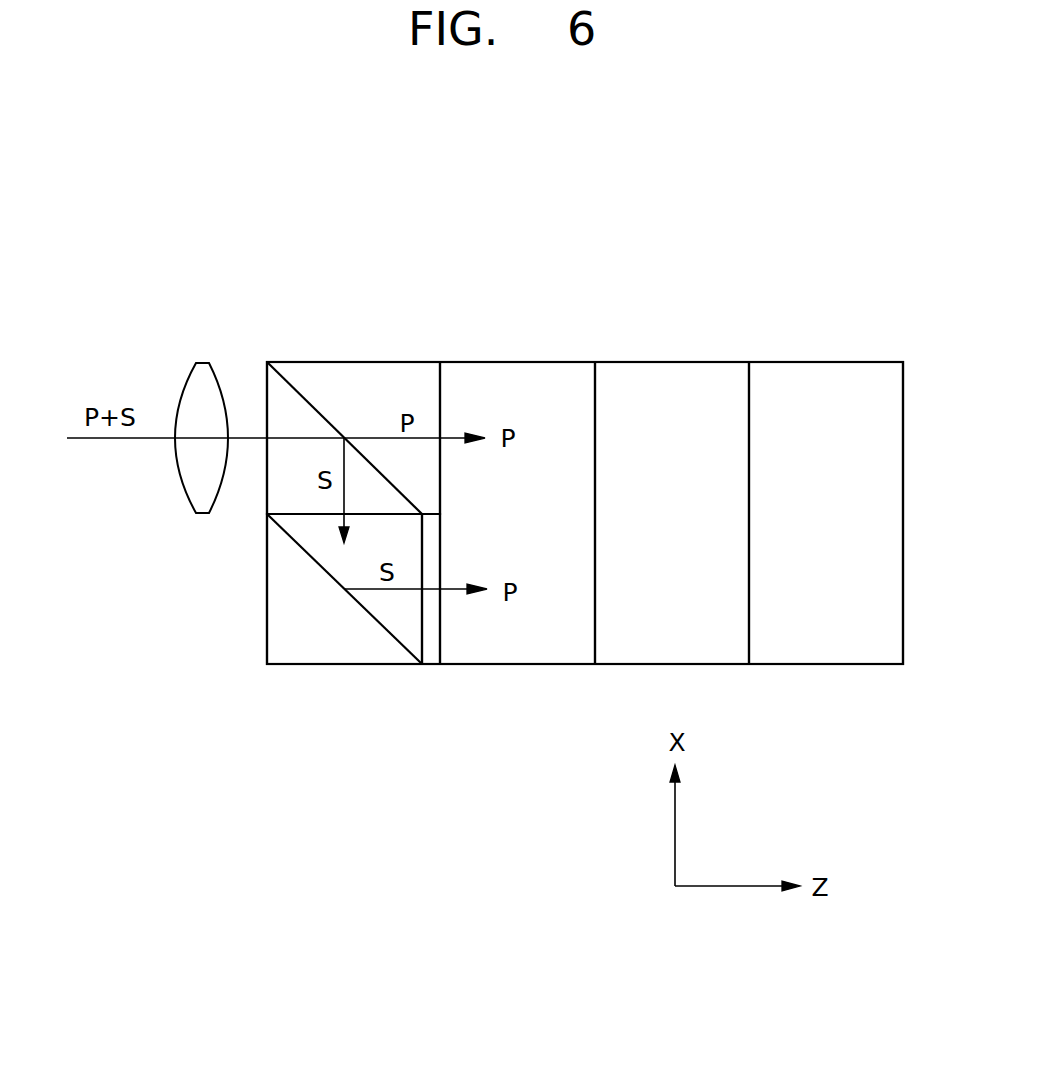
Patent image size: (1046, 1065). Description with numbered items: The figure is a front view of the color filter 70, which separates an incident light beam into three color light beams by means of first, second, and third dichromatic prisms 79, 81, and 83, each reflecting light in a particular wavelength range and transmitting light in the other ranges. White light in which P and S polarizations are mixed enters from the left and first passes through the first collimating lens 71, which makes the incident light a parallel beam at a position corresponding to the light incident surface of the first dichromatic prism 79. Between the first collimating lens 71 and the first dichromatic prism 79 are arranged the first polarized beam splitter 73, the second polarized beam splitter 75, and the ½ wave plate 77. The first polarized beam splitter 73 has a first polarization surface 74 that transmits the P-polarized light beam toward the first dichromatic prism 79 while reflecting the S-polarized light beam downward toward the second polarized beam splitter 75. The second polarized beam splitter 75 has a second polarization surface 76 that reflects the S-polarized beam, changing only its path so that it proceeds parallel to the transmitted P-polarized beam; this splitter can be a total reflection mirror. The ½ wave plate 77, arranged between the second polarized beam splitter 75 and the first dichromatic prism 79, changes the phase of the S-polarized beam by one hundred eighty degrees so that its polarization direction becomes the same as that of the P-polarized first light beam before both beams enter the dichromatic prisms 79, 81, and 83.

The color filter 70 is at (817, 260).
The first collimating lens 71 is at (202, 362).
The first polarized beam splitter 73 is at (377, 362).
The first polarization surface 74 is at (304, 396).
The second polarized beam splitter 75 is at (297, 655).
The second polarization surface 76 is at (373, 614).
The ½ wave plate 77 is at (432, 655).
The first dichromatic prism 79 is at (518, 362).
The second dichromatic prism 81 is at (682, 362).
The third dichromatic prism 83 is at (826, 362).